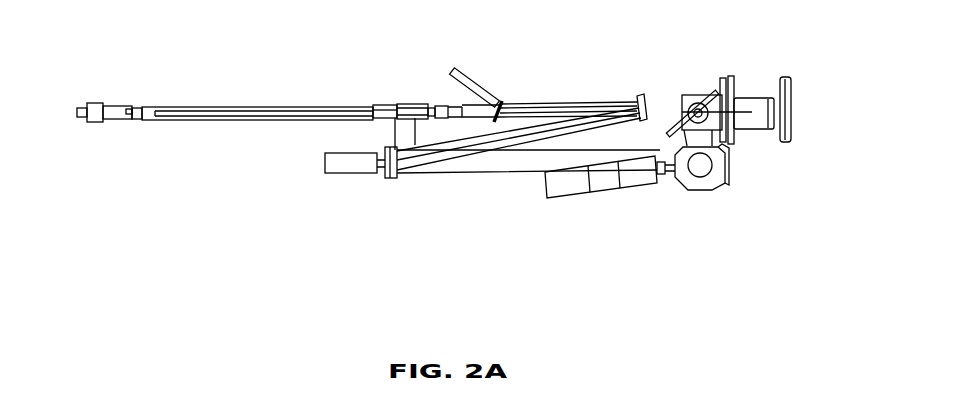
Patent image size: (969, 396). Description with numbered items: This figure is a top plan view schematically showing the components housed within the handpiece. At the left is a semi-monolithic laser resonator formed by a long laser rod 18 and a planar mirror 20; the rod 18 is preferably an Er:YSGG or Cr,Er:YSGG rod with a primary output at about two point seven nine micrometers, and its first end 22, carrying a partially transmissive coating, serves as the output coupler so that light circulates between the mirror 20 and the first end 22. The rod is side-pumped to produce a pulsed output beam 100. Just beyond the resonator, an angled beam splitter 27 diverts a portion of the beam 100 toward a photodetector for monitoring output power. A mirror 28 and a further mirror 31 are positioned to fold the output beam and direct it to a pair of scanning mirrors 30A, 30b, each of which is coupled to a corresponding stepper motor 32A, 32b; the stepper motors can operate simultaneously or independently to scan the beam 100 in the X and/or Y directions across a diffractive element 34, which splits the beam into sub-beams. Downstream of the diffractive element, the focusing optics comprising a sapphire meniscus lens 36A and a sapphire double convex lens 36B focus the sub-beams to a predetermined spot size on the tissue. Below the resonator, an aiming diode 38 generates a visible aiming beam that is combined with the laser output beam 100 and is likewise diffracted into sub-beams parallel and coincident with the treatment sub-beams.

The laser rod 18 is at (232, 113).
The planar mirror 20 is at (103, 122).
The first end 22 is at (376, 103).
The output beam 100 is at (412, 103).
The beam splitter 27 is at (507, 100).
The mirror 28 is at (646, 96).
The aiming diode 38 is at (340, 175).
The stepper motor 32A is at (577, 198).
The scanning mirror 30A is at (693, 191).
The mirror 31 is at (730, 166).
The stepper motor 32b is at (688, 93).
The scanning mirror 30b is at (707, 93).
The diffractive element 34 is at (727, 77).
The meniscus lens 36A is at (738, 84).
The double convex lens 36B is at (792, 99).